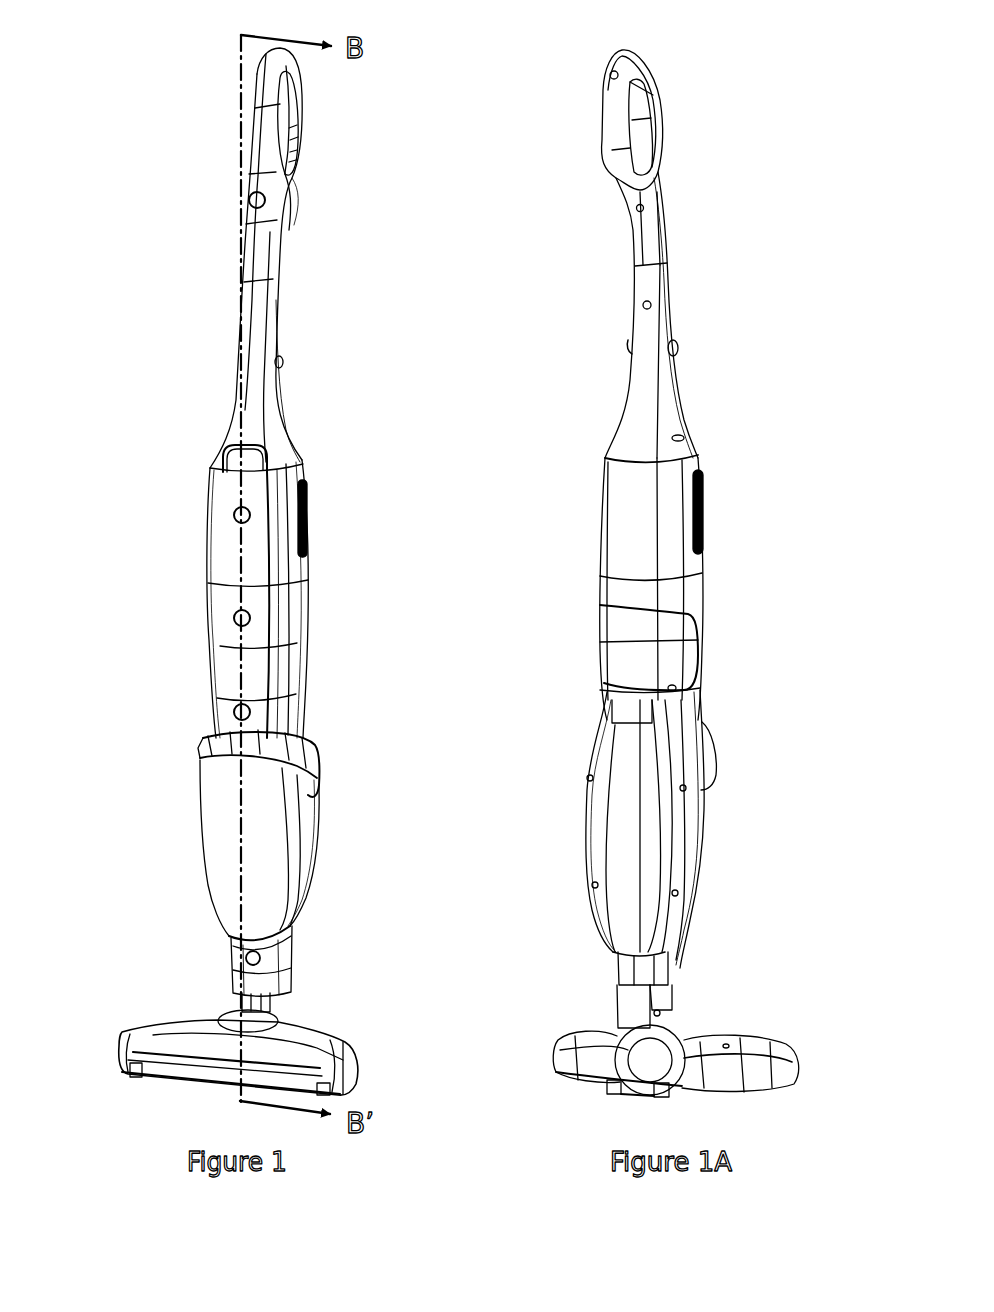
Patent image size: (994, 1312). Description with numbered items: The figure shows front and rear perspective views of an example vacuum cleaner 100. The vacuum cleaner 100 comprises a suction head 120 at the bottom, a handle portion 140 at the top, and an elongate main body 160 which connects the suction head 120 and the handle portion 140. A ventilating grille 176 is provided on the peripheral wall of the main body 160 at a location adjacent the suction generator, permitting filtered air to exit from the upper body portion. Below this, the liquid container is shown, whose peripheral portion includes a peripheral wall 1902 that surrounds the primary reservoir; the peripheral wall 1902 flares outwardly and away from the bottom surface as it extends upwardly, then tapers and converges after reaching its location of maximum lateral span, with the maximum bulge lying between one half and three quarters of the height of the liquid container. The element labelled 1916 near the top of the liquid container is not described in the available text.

In FIG. 1, the vacuum cleaner 100 is at (188, 243).
In FIG. 1A, the vacuum cleaner 100 is at (732, 231).
In FIG. 1, the handle portion 140 is at (525, 58).
In FIG. 1, the main body 160 is at (525, 467).
In FIG. 1, the suction head 120 is at (360, 1030).
In FIG. 1, the strap / cover 1916 is at (230, 748).
In FIG. 1, the peripheral wall 1902 is at (259, 878).
In FIG. 1A, the ventilating grille 176 is at (712, 512).